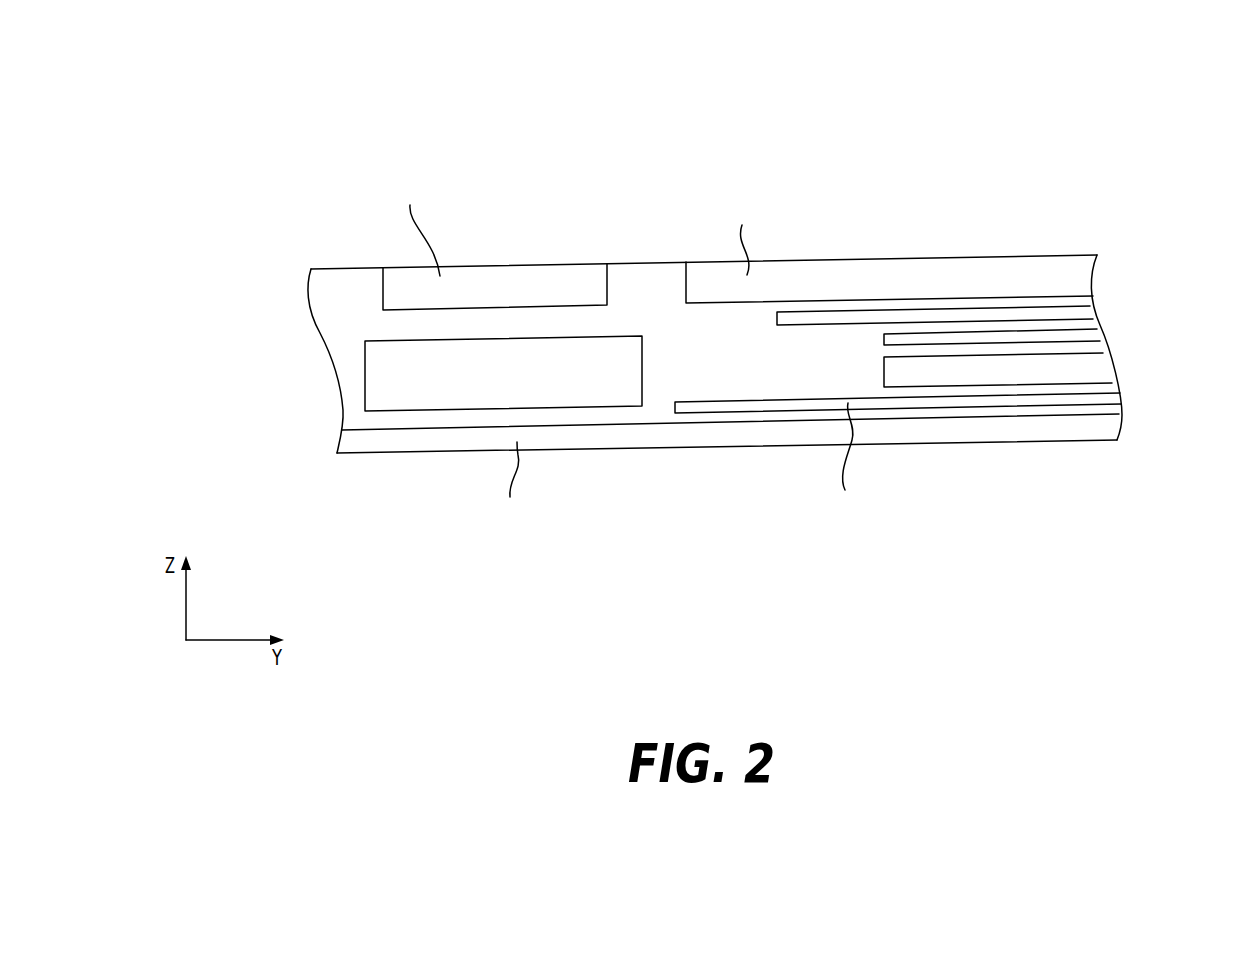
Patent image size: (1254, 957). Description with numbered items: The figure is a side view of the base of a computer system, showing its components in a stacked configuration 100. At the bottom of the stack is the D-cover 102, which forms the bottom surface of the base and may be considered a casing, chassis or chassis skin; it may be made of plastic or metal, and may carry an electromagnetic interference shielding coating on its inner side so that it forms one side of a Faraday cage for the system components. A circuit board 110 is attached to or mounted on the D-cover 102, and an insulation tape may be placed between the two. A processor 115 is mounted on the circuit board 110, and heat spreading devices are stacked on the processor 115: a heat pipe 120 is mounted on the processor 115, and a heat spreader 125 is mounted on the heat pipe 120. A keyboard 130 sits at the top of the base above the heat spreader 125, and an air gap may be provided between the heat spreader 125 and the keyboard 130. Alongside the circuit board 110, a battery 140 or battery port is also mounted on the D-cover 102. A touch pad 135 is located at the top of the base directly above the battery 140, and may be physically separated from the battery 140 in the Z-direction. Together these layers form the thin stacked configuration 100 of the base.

The stacked configuration 100 is at (370, 113).
The D-cover 102 is at (412, 442).
The circuit board 110 is at (1113, 398).
The processor 115 is at (1098, 367).
The heat pipe 120 is at (1088, 336).
The heat spreader 125 is at (1087, 313).
The keyboard 130 is at (905, 270).
The touch pad 135 is at (547, 275).
The battery 140 is at (366, 388).